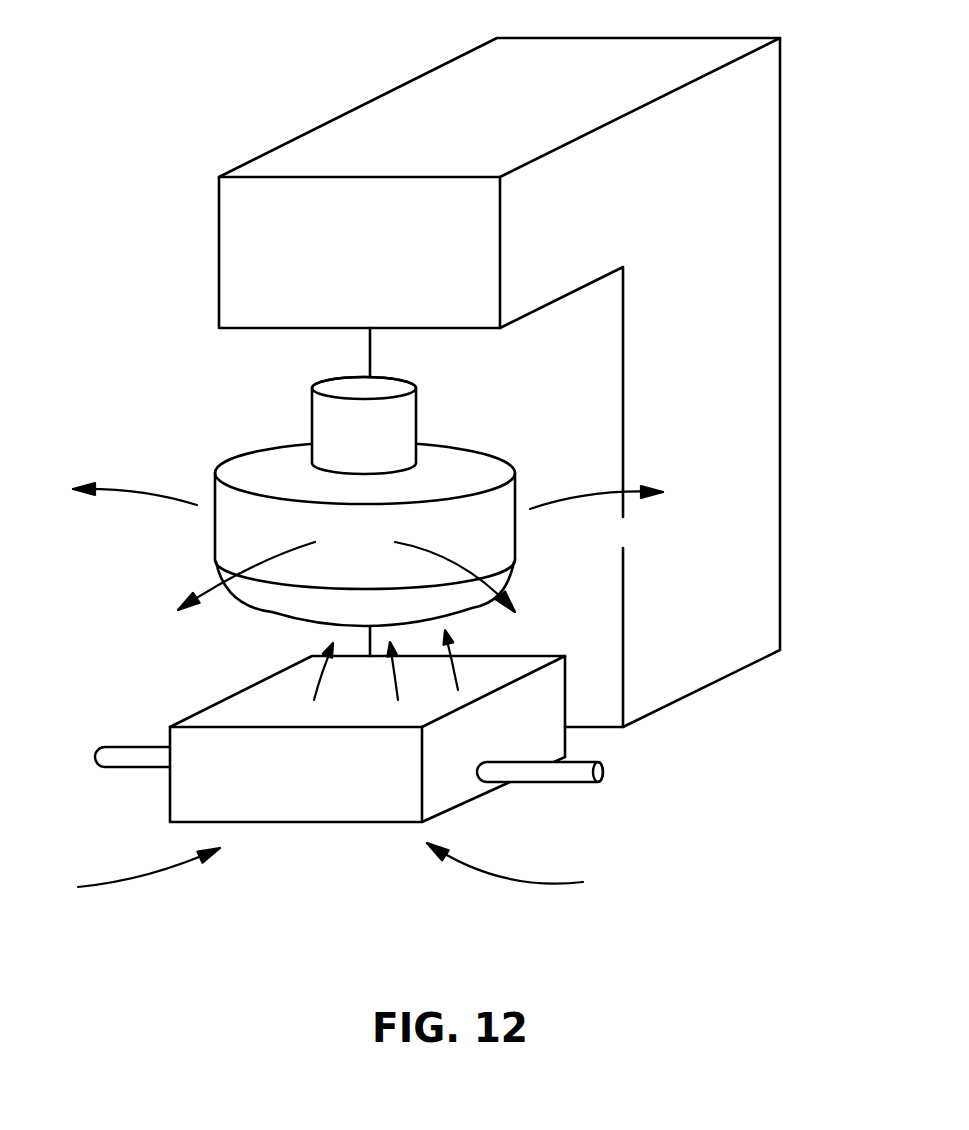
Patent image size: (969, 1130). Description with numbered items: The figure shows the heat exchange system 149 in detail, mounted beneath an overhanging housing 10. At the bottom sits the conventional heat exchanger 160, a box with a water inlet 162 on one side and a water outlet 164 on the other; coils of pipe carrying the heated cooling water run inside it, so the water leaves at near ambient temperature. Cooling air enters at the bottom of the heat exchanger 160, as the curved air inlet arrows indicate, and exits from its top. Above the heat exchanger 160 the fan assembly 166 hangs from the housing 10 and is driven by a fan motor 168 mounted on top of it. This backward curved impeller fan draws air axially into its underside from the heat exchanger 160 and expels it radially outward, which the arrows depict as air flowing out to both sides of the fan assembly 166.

The machine frame 10 is at (877, 160).
The heat exchange system 149 is at (58, 684).
The heat exchanger 160 is at (453, 790).
The water inlet 162 is at (595, 760).
The water outlet 164 is at (120, 757).
The fan housing 166 is at (213, 532).
The fan motor 168 is at (417, 417).